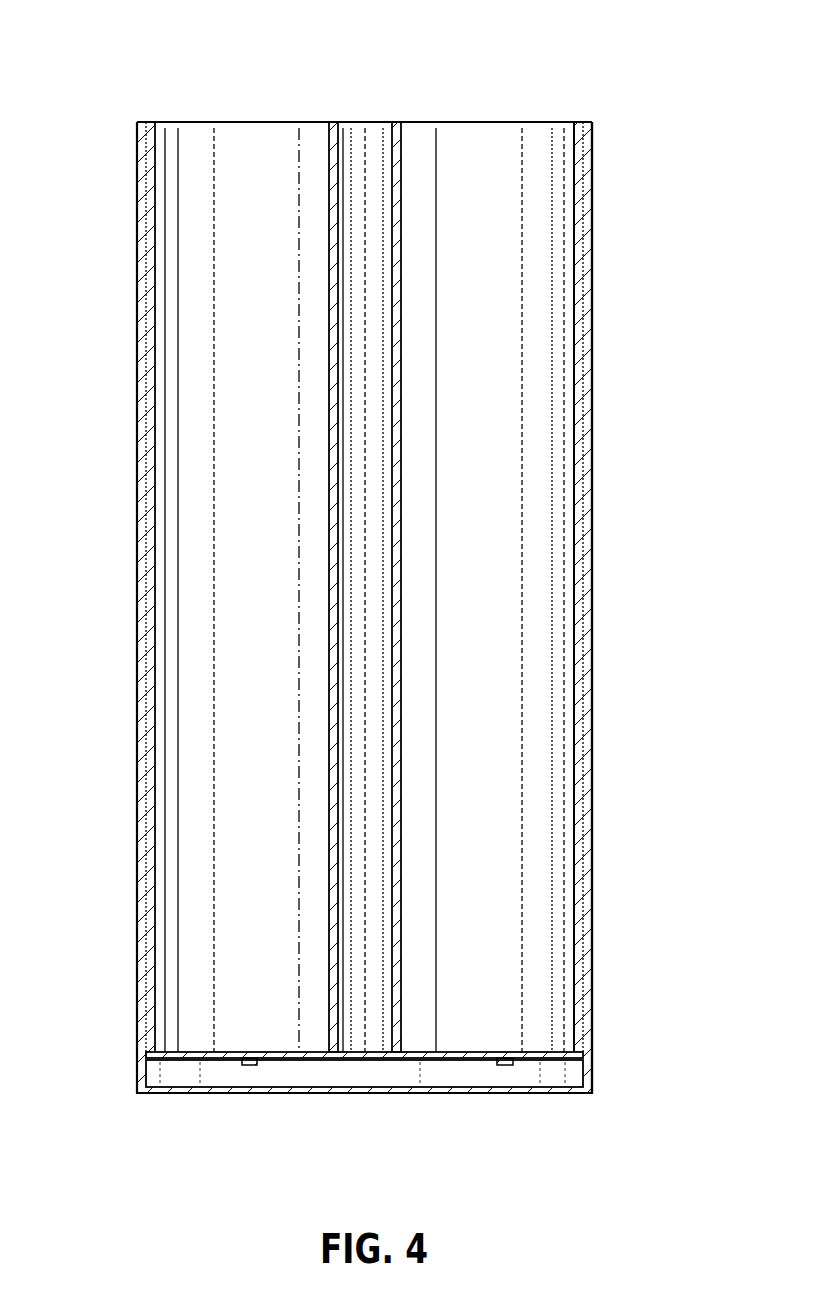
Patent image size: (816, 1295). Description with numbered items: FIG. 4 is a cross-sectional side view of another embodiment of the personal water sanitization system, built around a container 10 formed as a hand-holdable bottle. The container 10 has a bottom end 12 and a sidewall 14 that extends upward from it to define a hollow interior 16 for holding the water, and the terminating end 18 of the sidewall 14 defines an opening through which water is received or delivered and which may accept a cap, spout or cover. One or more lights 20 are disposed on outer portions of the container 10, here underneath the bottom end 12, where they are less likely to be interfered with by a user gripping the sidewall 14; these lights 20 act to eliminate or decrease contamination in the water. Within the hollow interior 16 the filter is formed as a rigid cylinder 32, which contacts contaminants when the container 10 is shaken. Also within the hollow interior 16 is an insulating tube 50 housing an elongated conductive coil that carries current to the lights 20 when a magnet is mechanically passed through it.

The container 10 is at (155, 60).
The bottom end 12 is at (570, 1052).
The sidewall 14 is at (583, 412).
The hollow interior 16 is at (453, 158).
The terminating end 18 is at (592, 135).
The lights 20 is at (250, 1060).
The rigid cylinder 32 is at (574, 142).
The insulating tube 50 is at (337, 122).